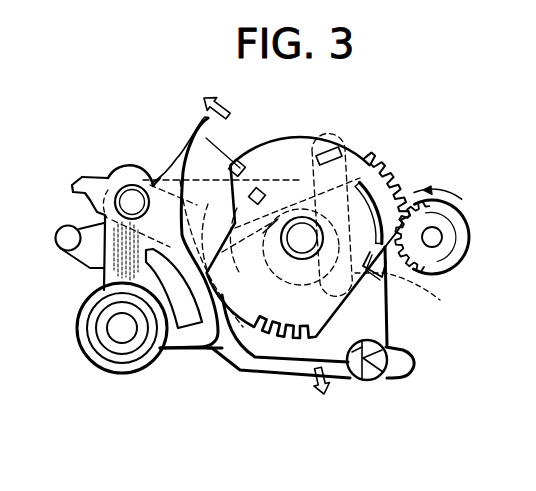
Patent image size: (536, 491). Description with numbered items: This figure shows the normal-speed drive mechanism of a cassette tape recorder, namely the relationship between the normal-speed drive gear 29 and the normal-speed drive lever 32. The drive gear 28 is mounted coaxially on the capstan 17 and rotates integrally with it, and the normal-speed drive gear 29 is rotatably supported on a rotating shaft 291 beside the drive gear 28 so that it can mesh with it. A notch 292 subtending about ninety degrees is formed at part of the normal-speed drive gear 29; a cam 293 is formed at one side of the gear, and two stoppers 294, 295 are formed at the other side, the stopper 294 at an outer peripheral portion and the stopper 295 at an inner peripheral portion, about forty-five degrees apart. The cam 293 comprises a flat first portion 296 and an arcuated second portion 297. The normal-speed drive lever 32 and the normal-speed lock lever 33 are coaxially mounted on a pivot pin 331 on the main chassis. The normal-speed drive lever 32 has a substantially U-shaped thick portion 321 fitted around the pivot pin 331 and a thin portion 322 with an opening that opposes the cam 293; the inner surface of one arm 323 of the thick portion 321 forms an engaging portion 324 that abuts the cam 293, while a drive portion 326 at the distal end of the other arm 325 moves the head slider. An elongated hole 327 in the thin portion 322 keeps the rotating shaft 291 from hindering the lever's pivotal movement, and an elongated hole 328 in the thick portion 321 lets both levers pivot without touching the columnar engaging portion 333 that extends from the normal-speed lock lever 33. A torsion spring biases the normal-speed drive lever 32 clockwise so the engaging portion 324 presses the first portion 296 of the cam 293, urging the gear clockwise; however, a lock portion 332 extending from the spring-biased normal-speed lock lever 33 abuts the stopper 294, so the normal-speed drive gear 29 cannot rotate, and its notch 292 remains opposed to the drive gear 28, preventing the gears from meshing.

The capstan 17 is at (442, 233).
The drive gear 28 is at (468, 255).
The normal-speed drive gear 29 is at (289, 134).
The rotating shaft 291 is at (295, 282).
The notch 292 is at (389, 326).
The cam 293 is at (385, 276).
The stopper 294 is at (268, 190).
The stopper 295 is at (343, 150).
The first portion 296 is at (368, 162).
The second portion 297 is at (430, 300).
The normal-speed drive lever 32 is at (282, 370).
The thick portion 321 is at (220, 346).
The thin portion 322 is at (398, 343).
The arm 323 is at (314, 180).
The engaging portion 324 is at (273, 250).
The arm 325 is at (358, 380).
The drive portion 326 is at (380, 382).
The elongated hole 327 is at (365, 348).
The elongated hole 328 is at (88, 267).
The normal-speed lock lever 33 is at (112, 270).
The pivot pin 331 is at (129, 345).
The lock portion 332 is at (237, 165).
The engaging portion 333 is at (150, 160).